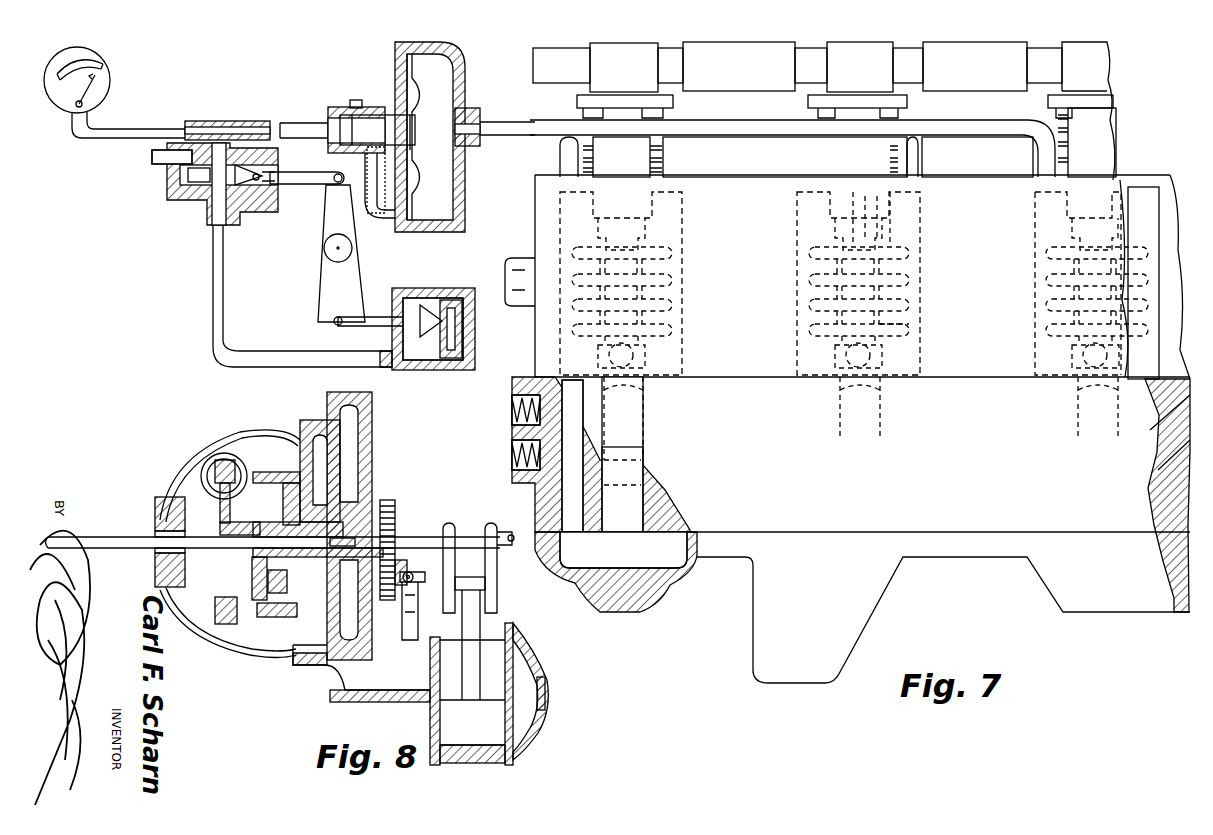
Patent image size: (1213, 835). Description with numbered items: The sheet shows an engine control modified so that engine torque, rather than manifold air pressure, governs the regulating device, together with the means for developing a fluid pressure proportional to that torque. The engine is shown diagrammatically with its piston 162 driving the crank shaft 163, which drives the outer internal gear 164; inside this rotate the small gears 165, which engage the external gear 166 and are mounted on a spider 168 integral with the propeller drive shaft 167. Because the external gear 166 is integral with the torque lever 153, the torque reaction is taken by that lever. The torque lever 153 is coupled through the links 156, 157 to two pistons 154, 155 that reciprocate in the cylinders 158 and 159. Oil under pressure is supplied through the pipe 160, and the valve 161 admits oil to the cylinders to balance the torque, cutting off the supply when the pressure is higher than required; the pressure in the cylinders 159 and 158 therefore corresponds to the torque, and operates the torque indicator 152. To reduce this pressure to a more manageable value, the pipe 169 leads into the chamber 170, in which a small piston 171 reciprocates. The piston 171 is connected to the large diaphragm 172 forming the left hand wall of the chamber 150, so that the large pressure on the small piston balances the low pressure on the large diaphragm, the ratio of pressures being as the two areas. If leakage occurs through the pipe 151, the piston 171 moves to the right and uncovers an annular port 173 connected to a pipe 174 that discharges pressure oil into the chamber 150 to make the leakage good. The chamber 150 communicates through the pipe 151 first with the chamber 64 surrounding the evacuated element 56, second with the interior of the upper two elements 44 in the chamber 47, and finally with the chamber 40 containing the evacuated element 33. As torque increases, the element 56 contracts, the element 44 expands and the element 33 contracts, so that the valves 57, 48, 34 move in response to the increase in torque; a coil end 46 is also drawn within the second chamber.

In FIG. 8, the torque indicator 152 is at (95, 110).
In FIG. 8, the pipe 169 is at (254, 122).
In FIG. 8, the pipe 160 is at (153, 158).
In FIG. 8, the cylinder 159 is at (170, 200).
In FIG. 8, the valve 161 is at (183, 208).
In FIG. 8, the piston 154 is at (232, 212).
In FIG. 8, the link 156 is at (298, 184).
In FIG. 8, the torque lever 153 is at (322, 256).
In FIG. 8, the link 157 is at (368, 322).
In FIG. 8, the piston 155 is at (440, 290).
In FIG. 8, the cylinder 158 is at (475, 340).
In FIG. 8, the diaphragm 172 is at (398, 72).
In FIG. 8, the annular port 173 is at (354, 107).
In FIG. 8, the chamber 150 is at (430, 137).
In FIG. 8, the chamber 170 is at (345, 150).
In FIG. 8, the small piston 171 is at (412, 150).
In FIG. 8, the pipe 174 is at (372, 220).
In FIG. 7, the pipe 174 is at (560, 497).
In FIG. 8, the small gears 165 is at (262, 472).
In FIG. 8, the spider 168 is at (288, 480).
In FIG. 8, the external gear 166 is at (250, 445).
In FIG. 8, the propeller drive shaft 167 is at (152, 540).
In FIG. 8, the outer internal gear 164 is at (290, 602).
In FIG. 8, the crank shaft 163 is at (425, 533).
In FIG. 8, the piston 162 is at (489, 694).
In FIG. 7, the pipe 151 is at (540, 126).
In FIG. 7, the chamber 64 is at (568, 205).
In FIG. 7, the evacuated element 56 is at (580, 250).
In FIG. 7, the valve 57 is at (635, 357).
In FIG. 7, the chamber 47 is at (805, 228).
In FIG. 7, the element 44 is at (812, 253).
In FIG. 7, the coil end 46 is at (905, 330).
In FIG. 7, the valve 48 is at (873, 358).
In FIG. 7, the chamber 40 is at (1045, 217).
In FIG. 7, the evacuated element 33 is at (1050, 253).
In FIG. 7, the valve 34 is at (1090, 355).